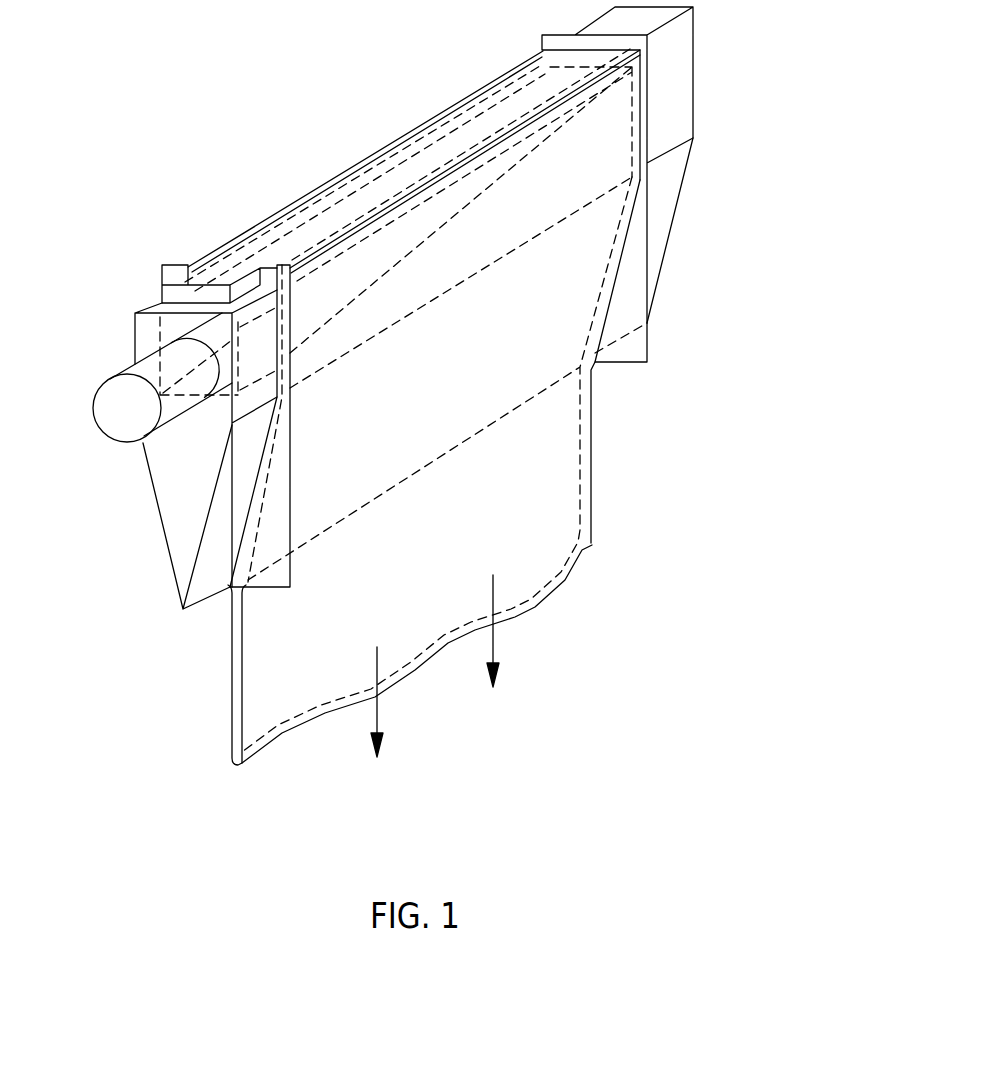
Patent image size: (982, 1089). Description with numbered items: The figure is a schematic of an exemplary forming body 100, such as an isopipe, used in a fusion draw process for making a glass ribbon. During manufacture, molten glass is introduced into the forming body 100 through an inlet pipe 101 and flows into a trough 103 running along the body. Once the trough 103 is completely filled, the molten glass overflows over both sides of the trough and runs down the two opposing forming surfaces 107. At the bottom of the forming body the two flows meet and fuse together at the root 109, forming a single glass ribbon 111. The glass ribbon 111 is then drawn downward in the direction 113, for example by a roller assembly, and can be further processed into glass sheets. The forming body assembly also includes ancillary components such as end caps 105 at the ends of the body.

The forming body 100 is at (748, 98).
The inlet pipe 101 is at (113, 415).
The trough 103 is at (357, 252).
The end caps 105 is at (175, 510).
The forming surfaces 107 is at (470, 367).
The root 109 is at (216, 602).
The glass ribbon 111 is at (258, 710).
The direction 113 is at (497, 645).